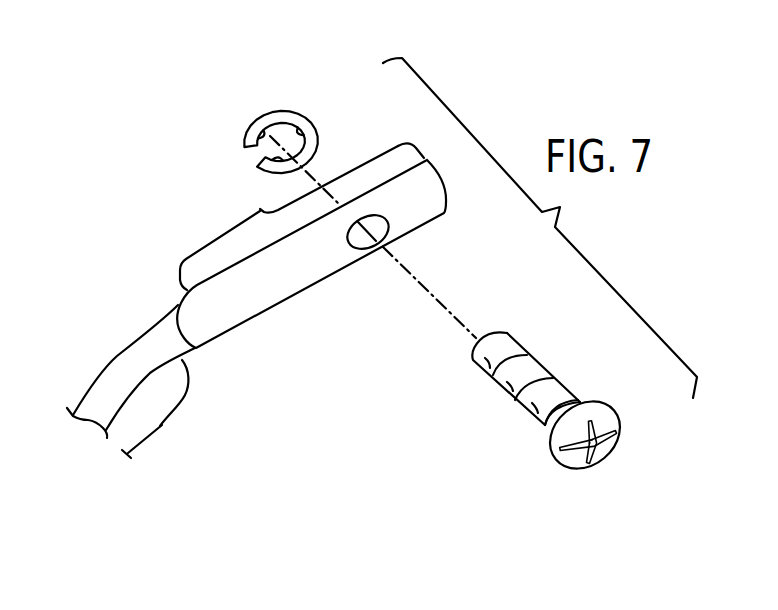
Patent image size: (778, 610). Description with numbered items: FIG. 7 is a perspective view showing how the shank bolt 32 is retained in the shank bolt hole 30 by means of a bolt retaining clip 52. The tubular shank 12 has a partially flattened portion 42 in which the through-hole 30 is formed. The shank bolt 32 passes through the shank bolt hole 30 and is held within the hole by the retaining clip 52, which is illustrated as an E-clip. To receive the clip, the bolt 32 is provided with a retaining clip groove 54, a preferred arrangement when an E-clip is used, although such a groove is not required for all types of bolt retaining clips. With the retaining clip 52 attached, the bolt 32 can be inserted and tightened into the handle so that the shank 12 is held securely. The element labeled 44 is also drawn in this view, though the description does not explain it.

The shank 12 is at (117, 361).
The shank bolt hole 30 is at (363, 246).
The shank bolt 32 is at (515, 400).
The partially flattened portion 42 is at (260, 209).
The clamp 44 is at (161, 427).
The retaining clip 52 is at (313, 128).
The retaining clip groove 54 is at (538, 425).